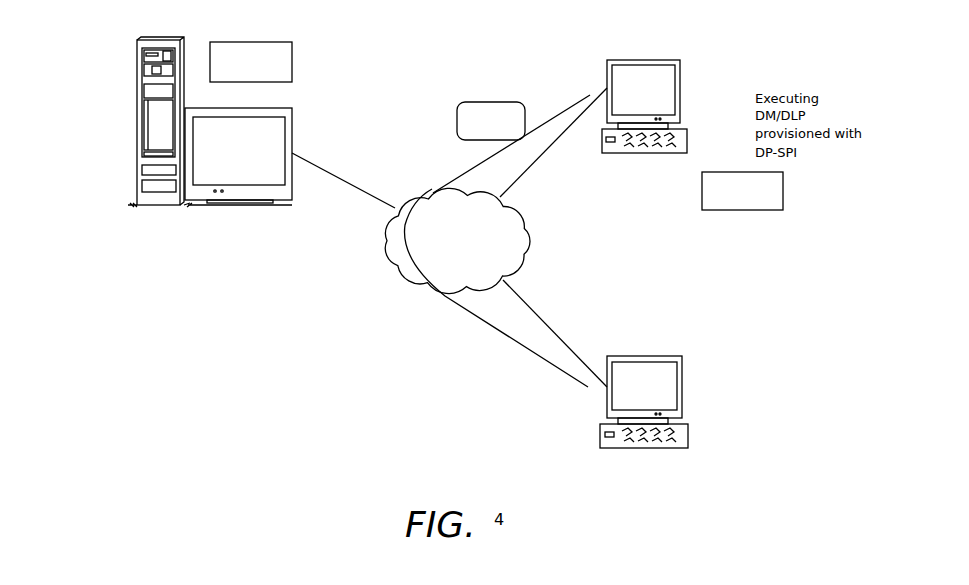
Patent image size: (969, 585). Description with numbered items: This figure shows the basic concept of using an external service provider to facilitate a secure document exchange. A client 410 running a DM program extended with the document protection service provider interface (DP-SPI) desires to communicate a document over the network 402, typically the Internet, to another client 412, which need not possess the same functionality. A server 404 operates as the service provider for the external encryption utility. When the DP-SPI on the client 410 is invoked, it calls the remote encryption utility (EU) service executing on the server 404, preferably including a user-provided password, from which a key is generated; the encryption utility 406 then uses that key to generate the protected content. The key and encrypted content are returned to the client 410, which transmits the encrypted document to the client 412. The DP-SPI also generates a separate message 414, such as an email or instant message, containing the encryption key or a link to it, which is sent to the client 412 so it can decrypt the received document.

The network 402 is at (428, 190).
The server 404 is at (137, 123).
The encryption utility 406 is at (285, 61).
The client 410 is at (683, 92).
The client 412 is at (685, 386).
The message 414 is at (491, 121).